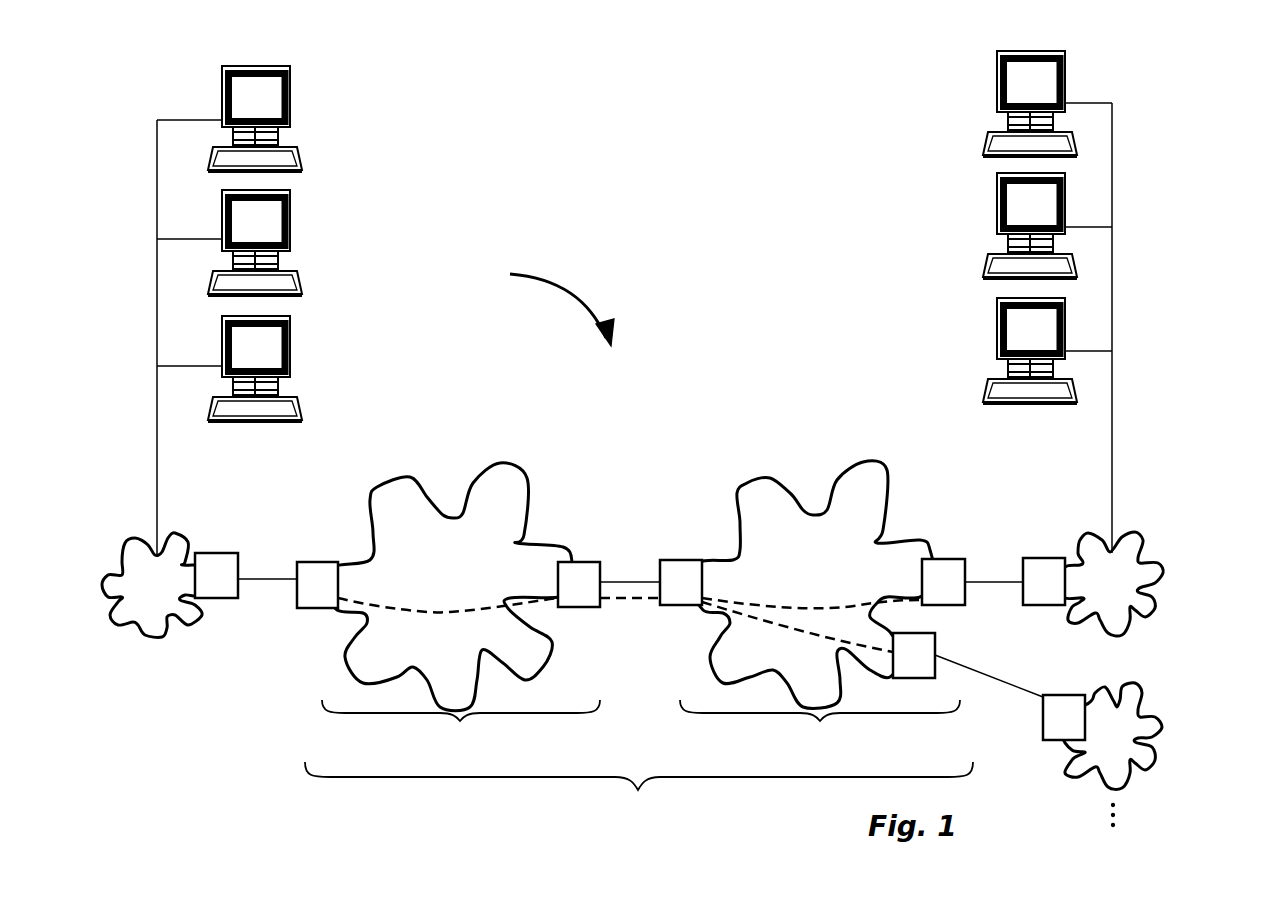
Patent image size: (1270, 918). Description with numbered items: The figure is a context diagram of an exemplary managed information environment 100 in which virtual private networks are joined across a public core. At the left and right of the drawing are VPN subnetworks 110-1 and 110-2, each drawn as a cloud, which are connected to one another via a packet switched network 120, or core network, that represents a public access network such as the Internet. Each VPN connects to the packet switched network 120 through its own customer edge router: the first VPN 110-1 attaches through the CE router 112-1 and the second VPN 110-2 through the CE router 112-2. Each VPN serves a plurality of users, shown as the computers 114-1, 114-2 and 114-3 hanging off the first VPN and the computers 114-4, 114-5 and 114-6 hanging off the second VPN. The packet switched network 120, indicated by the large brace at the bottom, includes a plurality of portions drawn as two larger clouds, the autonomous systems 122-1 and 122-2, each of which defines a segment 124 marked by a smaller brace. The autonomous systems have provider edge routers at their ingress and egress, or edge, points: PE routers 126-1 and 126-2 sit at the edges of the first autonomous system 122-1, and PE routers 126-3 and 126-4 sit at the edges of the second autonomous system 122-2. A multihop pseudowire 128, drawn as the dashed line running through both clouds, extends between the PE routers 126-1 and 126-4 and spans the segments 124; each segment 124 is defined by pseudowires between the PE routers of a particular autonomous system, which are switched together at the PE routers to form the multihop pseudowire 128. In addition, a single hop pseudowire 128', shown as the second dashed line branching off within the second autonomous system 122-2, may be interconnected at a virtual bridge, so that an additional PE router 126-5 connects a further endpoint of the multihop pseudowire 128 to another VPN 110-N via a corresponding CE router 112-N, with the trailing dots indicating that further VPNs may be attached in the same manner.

The environment 100 is at (547, 305).
The VPN subnetwork 110-1 is at (118, 632).
The VPN subnetwork 110-2 is at (1165, 583).
The VPN subnetwork 110-N is at (1160, 740).
The CE router 112-1 is at (226, 598).
The CE router 112-2 is at (1035, 558).
The CE router 112-N is at (1043, 715).
The user 114-1 is at (290, 113).
The user 114-2 is at (290, 238).
The user 114-3 is at (290, 364).
The user 114-4 is at (997, 103).
The user 114-5 is at (997, 227).
The user 114-6 is at (997, 351).
The packet switched network 120 is at (638, 790).
The autonomous system 122-1 is at (450, 510).
The autonomous system 122-2 is at (812, 512).
The segment 124 is at (460, 721).
The PE router 126-1 is at (307, 562).
The PE router 126-2 is at (588, 562).
The PE router 126-3 is at (680, 560).
The PE router 126-4 is at (955, 559).
The PE router 126-5 is at (935, 645).
The multihop pseudowire 128 is at (630, 634).
The single hop pseudowire 128' is at (797, 642).